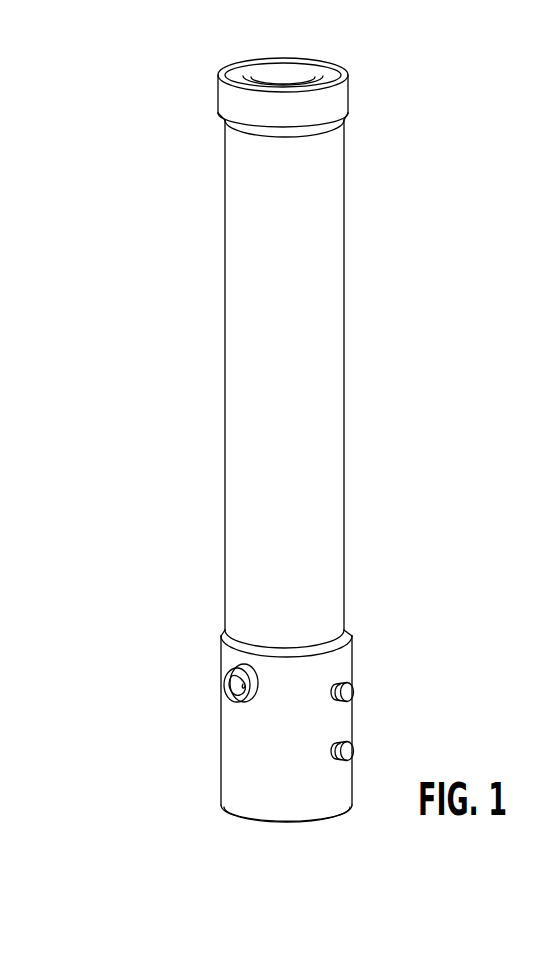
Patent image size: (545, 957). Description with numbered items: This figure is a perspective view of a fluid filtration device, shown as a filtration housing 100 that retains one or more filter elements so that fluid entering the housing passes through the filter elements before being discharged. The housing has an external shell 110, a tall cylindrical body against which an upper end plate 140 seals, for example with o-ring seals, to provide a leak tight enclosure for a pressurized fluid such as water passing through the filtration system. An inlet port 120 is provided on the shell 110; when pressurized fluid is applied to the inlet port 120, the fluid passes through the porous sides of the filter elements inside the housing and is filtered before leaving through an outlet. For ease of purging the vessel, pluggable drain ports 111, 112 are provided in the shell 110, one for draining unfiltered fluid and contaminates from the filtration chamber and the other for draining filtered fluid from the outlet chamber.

The filtration housing 100 is at (122, 222).
The external shell 110 is at (319, 376).
The pluggable drain port 111 is at (344, 683).
The pluggable drain port 112 is at (344, 742).
The inlet port 120 is at (240, 678).
The upper end plate 140 is at (283, 83).